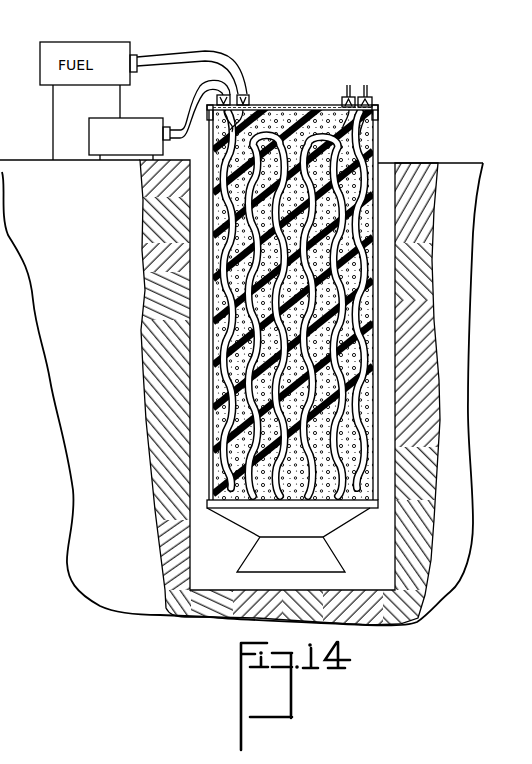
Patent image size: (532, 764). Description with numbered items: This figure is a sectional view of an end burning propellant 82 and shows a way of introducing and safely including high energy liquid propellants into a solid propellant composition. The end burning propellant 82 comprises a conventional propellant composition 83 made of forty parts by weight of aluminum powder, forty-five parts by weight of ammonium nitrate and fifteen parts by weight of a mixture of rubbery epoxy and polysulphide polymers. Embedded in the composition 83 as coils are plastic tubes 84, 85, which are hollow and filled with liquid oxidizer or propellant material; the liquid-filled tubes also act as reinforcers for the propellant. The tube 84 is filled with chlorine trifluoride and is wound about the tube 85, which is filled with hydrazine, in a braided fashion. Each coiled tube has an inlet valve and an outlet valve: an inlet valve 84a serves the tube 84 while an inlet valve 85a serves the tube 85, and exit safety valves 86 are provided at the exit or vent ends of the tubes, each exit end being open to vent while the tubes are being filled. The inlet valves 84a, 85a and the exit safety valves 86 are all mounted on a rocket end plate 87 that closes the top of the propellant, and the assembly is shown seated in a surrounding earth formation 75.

The earth formation 75 is at (241, 318).
The end burning propellant 82 is at (385, 165).
The propellant composition 83 is at (213, 273).
The plastic tube 84 is at (178, 56).
The inlet valve 84a is at (249, 95).
The plastic tube 85 is at (186, 132).
The inlet valve 85a is at (205, 80).
The exit safety valves 86 is at (367, 92).
The rocket end plate 87 is at (300, 106).